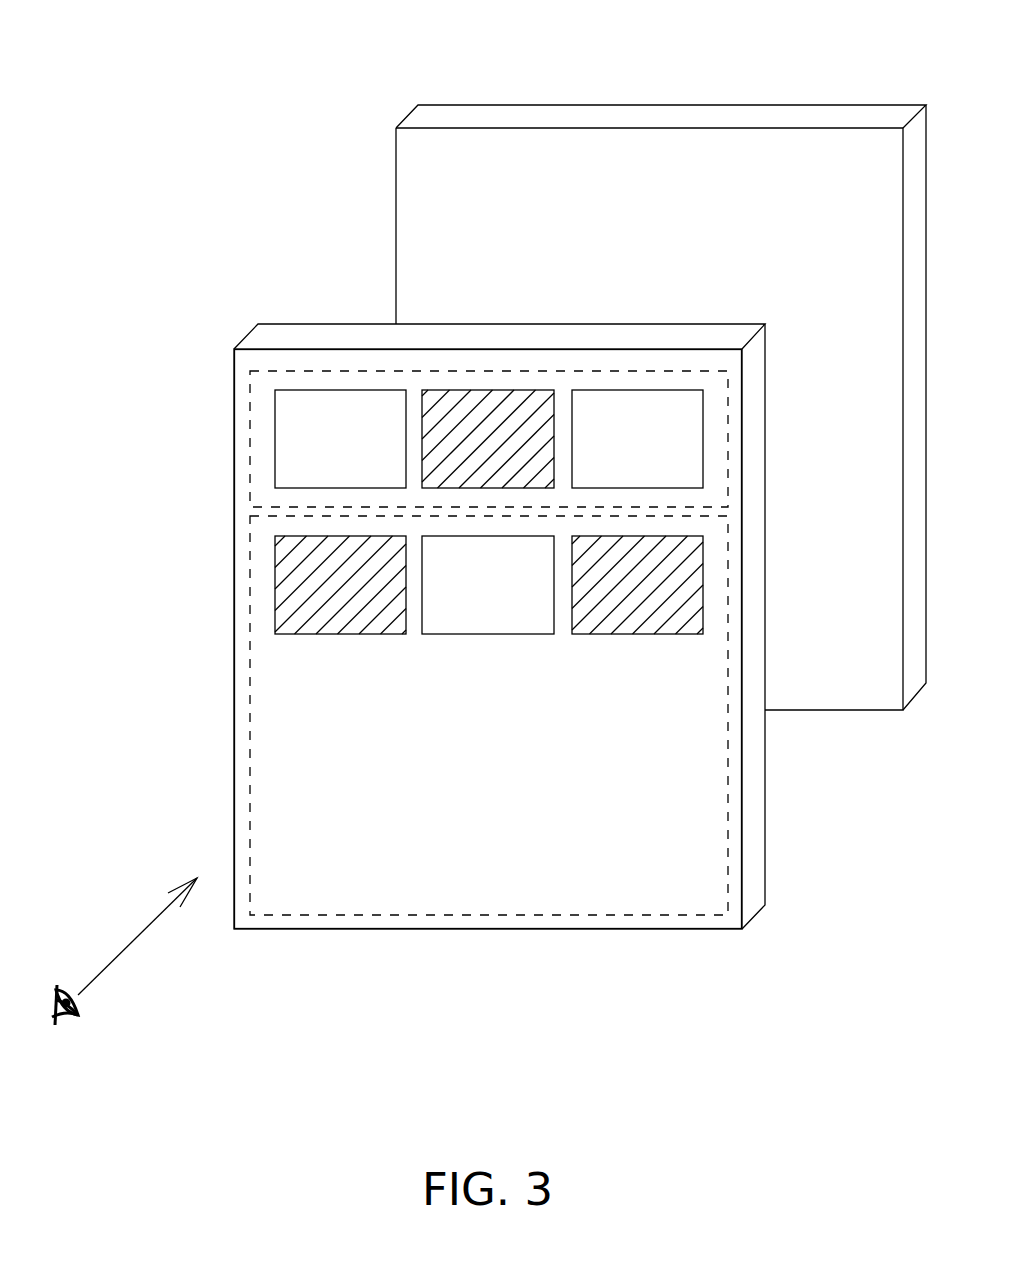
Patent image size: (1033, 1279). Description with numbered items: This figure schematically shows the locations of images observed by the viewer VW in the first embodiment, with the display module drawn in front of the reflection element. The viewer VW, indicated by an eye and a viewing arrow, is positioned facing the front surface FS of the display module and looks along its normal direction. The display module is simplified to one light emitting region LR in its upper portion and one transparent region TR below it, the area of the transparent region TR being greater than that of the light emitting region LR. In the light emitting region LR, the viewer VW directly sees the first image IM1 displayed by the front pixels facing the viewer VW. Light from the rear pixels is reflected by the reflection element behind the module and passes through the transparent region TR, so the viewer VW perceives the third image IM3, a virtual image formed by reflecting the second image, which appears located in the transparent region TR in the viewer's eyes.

The light emitting region LR is at (250, 430).
The first image IM1 is at (703, 440).
The third image IM3 is at (703, 587).
The transparent region TR is at (727, 772).
The front surface FS is at (735, 870).
The viewer VW is at (60, 988).